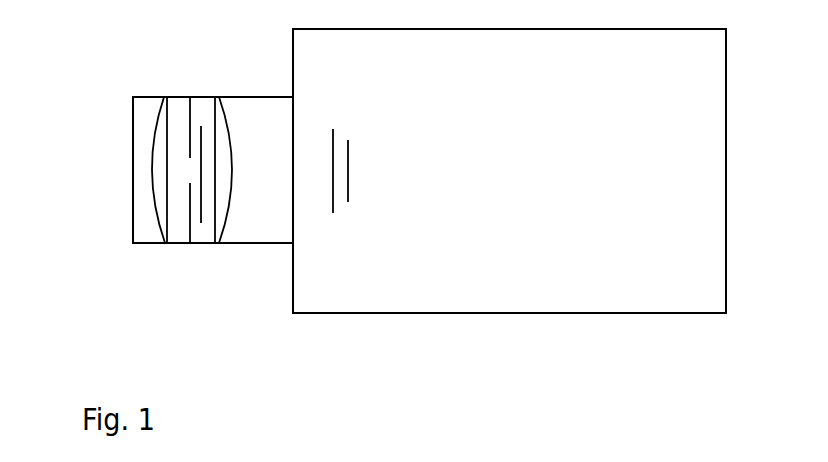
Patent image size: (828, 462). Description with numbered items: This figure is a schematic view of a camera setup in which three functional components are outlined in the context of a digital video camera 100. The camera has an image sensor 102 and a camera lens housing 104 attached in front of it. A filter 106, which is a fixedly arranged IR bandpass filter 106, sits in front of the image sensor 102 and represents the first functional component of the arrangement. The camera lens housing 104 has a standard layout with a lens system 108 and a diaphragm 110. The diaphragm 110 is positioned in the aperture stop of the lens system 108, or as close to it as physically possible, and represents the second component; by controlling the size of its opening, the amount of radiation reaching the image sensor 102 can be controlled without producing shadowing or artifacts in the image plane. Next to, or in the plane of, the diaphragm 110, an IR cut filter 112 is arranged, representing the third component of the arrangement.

The digital video camera 100 is at (643, 116).
The image sensor 102 is at (348, 177).
The camera lens housing 104 is at (135, 245).
The IR bandpass filter 106 is at (333, 213).
The lens system 108 is at (222, 97).
The diaphragm 110 is at (190, 245).
The IR cut filter 112 is at (203, 245).